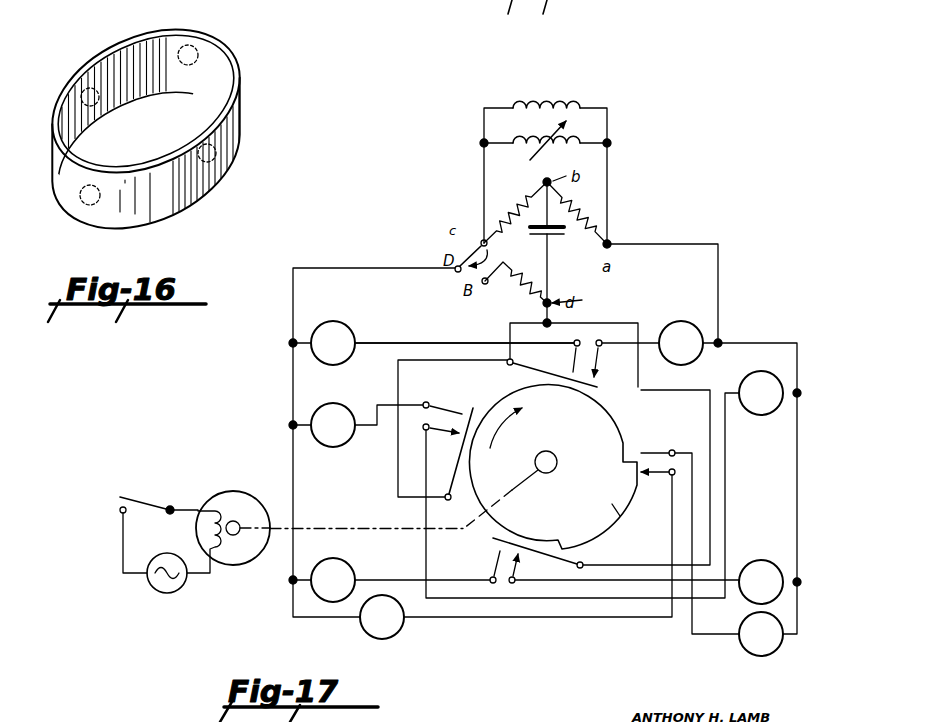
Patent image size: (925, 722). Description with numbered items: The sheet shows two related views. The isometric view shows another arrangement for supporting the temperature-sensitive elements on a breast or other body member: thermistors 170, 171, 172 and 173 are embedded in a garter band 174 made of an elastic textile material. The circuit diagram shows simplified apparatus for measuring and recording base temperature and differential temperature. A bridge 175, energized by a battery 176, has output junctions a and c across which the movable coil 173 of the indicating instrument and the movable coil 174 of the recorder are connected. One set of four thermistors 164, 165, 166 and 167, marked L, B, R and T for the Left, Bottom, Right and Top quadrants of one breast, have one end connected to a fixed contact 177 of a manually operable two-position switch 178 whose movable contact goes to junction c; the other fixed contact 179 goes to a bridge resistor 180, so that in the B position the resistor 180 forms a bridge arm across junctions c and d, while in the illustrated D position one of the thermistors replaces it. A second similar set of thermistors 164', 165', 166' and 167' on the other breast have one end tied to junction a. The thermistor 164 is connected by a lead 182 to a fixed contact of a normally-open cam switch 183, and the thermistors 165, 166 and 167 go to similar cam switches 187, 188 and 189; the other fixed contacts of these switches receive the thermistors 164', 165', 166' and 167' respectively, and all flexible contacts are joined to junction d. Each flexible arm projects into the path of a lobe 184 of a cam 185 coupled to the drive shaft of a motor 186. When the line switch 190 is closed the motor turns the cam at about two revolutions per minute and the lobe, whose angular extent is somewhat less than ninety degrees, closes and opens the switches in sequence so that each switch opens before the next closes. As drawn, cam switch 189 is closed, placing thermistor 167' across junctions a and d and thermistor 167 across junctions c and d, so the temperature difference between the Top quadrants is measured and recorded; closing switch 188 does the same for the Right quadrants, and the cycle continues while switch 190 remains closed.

In FIG. 17, the thermistor 164 is at (333, 325).
In FIG. 17, the thermistor 165 is at (331, 412).
In FIG. 17, the thermistor 166 is at (351, 570).
In FIG. 17, the thermistor 167 is at (406, 625).
In FIG. 17, the thermistor 164' is at (679, 324).
In FIG. 17, the thermistor 165' is at (767, 366).
In FIG. 17, the thermistor 166' is at (761, 564).
In FIG. 17, the thermistor 167' is at (729, 643).
In FIG. 16, the thermistor 170 is at (88, 80).
In FIG. 16, the thermistor 171 is at (192, 45).
In FIG. 16, the thermistor 172 is at (215, 160).
In FIG. 16, the thermistor / movable coil of indicating instrument 173 is at (84, 205).
In FIG. 17, the thermistor / movable coil of indicating instrument 173 is at (520, 150).
In FIG. 16, the garter band / movable coil of recorder 174 is at (297, 85).
In FIG. 17, the garter band / movable coil of recorder 174 is at (563, 95).
In FIG. 17, the bridge 175 is at (592, 268).
In FIG. 17, the battery 176 is at (524, 228).
In FIG. 17, the fixed contact 177 is at (455, 273).
In FIG. 17, the two-position switch 178 is at (479, 242).
In FIG. 17, the fixed contact 179 is at (481, 288).
In FIG. 17, the bridge resistor 180 is at (510, 280).
In FIG. 17, the lead 182 is at (404, 340).
In FIG. 17, the cam switch 183 is at (569, 373).
In FIG. 17, the lobe 184 is at (620, 516).
In FIG. 17, the cam 185 is at (583, 513).
In FIG. 17, the motor 186 is at (230, 490).
In FIG. 17, the cam switch 187 is at (455, 404).
In FIG. 17, the cam switch 188 is at (490, 561).
In FIG. 17, the cam switch 189 is at (655, 447).
In FIG. 17, the line switch 190 is at (138, 495).